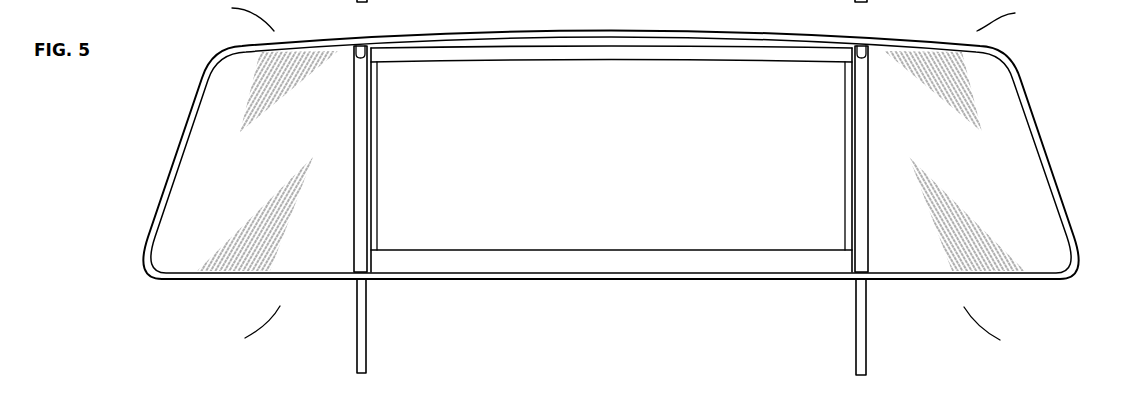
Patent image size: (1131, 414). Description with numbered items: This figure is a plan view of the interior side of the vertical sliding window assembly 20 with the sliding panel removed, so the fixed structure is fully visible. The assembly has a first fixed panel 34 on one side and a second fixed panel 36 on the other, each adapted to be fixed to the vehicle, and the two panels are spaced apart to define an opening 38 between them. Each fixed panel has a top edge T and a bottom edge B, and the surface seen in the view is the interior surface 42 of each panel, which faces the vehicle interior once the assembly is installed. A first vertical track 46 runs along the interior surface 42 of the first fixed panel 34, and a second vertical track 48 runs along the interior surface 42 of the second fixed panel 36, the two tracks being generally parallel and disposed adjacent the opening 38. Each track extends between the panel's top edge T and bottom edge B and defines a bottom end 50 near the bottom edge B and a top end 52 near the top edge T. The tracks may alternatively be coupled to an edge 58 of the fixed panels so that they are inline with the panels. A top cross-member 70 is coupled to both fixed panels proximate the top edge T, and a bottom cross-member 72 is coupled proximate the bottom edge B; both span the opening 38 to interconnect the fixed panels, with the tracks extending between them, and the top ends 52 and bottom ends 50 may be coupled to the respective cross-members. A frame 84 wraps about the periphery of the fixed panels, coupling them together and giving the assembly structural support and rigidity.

The vertical sliding window assembly 20 is at (615, 195).
The first fixed panel 34 is at (1033, 185).
The second fixed panel 36 is at (197, 173).
The opening 38 is at (742, 105).
The interior surface 42 is at (298, 148).
The first vertical track 46 is at (866, 313).
The second vertical track 48 is at (357, 312).
The bottom end 50 is at (405, 0).
The top end 52 is at (347, 63).
The edge 58 is at (378, 113).
The top cross-member 70 is at (653, 49).
The bottom cross-member 72 is at (518, 263).
The frame 84 is at (1024, 76).
The top edge T is at (274, 31).
The bottom edge B is at (280, 306).